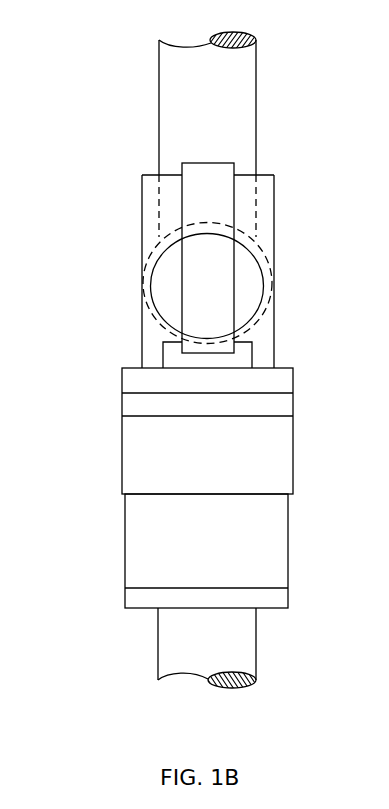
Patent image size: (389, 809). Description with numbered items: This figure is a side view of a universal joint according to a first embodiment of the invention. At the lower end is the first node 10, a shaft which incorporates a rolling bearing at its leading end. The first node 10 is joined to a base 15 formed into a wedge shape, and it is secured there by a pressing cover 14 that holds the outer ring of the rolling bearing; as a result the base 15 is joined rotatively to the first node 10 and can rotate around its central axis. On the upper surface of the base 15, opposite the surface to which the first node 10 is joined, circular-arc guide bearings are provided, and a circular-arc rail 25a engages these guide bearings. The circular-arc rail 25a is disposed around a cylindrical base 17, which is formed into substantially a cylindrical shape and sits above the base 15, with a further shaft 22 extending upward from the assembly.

The first node 10 is at (170, 643).
The pressing cover 14 is at (276, 598).
The base 15 is at (132, 409).
The cylindrical base 17 is at (152, 218).
The upper shaft 22 is at (233, 93).
The circular-arc rail 25a is at (222, 204).